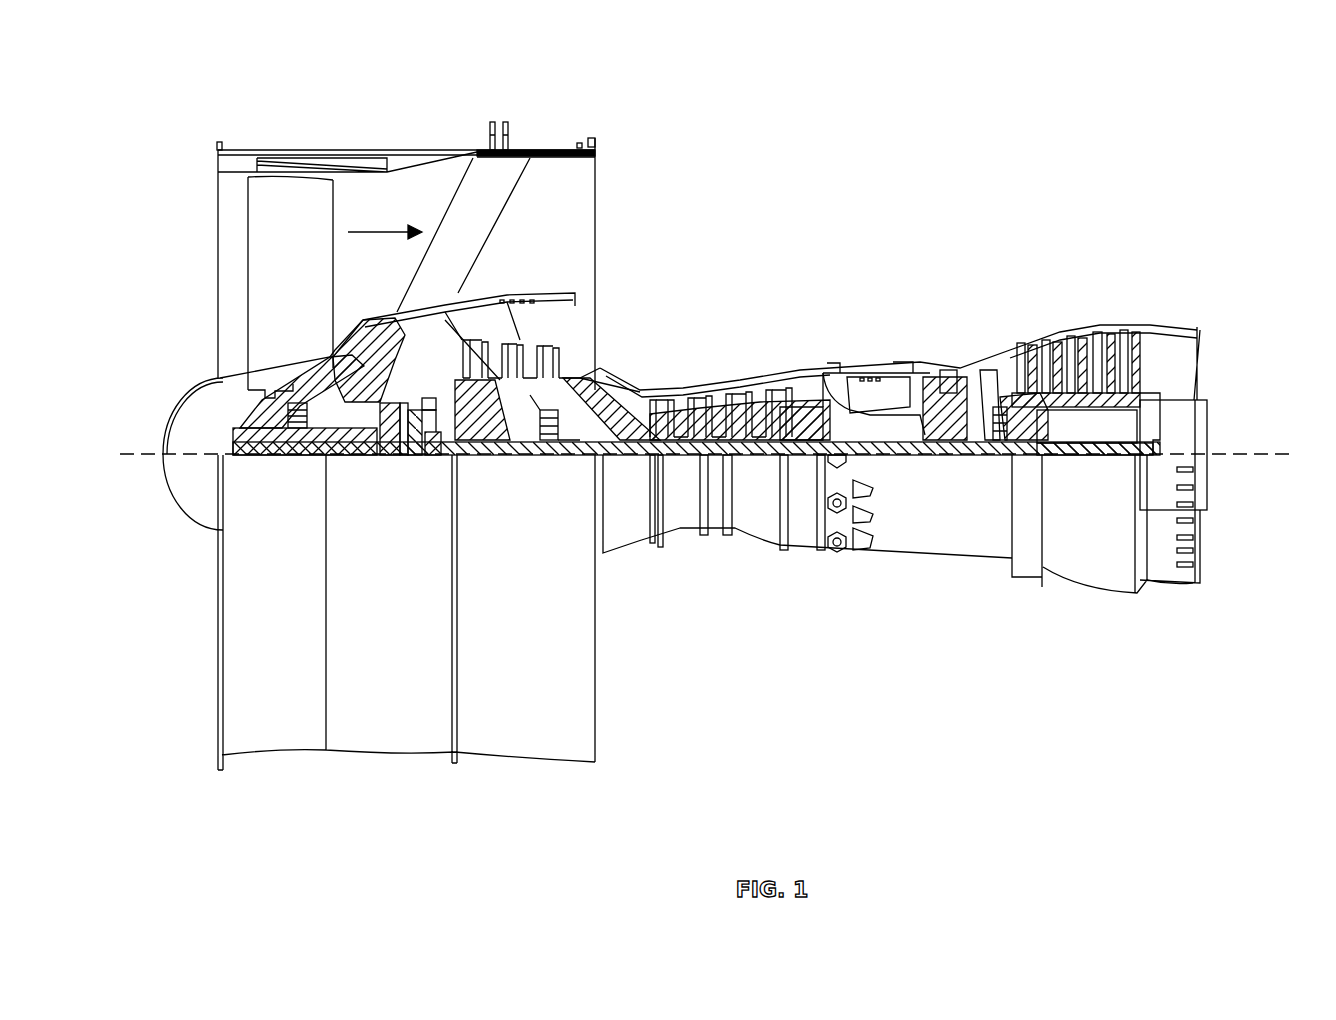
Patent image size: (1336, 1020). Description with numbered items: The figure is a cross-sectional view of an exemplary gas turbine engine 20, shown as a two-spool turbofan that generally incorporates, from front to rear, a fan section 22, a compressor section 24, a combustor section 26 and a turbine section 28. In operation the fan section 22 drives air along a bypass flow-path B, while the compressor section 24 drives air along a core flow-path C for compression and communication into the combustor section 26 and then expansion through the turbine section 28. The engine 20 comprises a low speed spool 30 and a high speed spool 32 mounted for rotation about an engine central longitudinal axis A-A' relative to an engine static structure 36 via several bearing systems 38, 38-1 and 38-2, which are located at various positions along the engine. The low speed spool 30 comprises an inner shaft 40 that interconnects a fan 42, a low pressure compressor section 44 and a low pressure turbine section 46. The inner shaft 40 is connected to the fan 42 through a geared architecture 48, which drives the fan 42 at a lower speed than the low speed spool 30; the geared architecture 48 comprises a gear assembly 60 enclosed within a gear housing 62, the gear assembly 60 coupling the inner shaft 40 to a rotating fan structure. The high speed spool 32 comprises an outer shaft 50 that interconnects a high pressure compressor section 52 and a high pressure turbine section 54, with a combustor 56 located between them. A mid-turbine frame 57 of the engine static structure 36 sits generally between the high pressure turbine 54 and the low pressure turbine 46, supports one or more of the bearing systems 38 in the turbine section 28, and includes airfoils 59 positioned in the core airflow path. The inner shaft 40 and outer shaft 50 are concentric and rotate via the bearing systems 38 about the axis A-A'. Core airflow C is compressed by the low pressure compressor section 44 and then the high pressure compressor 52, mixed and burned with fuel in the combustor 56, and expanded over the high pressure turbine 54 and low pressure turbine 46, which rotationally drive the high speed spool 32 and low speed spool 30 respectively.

The gas turbine engine 20 is at (928, 186).
The fan section 22 is at (210, 136).
The compressor section 24 is at (458, 263).
The combustor section 26 is at (826, 263).
The turbine section 28 is at (1140, 263).
The low speed spool 30 is at (762, 466).
The high speed spool 32 is at (800, 420).
The engine static structure 36 is at (367, 742).
The bearing system 38 is at (985, 456).
The bearing system 38-1 is at (284, 430).
The bearing system 38-2 is at (548, 441).
The inner shaft 40 is at (618, 460).
The fan 42 is at (300, 274).
The low pressure compressor section 44 is at (543, 348).
The low pressure turbine section 46 is at (1080, 345).
The geared architecture 48 is at (414, 468).
The outer shaft 50 is at (882, 450).
The high pressure compressor section 52 is at (740, 412).
The high pressure turbine section 54 is at (947, 380).
The combustor 56 is at (878, 392).
The mid-turbine frame 57 is at (980, 365).
The airfoils 59 is at (990, 354).
The gear assembly 60 is at (435, 433).
The gear housing 62 is at (430, 406).
The engine central longitudinal axis A is at (134, 449).
The bypass flow-path B is at (376, 238).
The core flow-path C is at (342, 327).